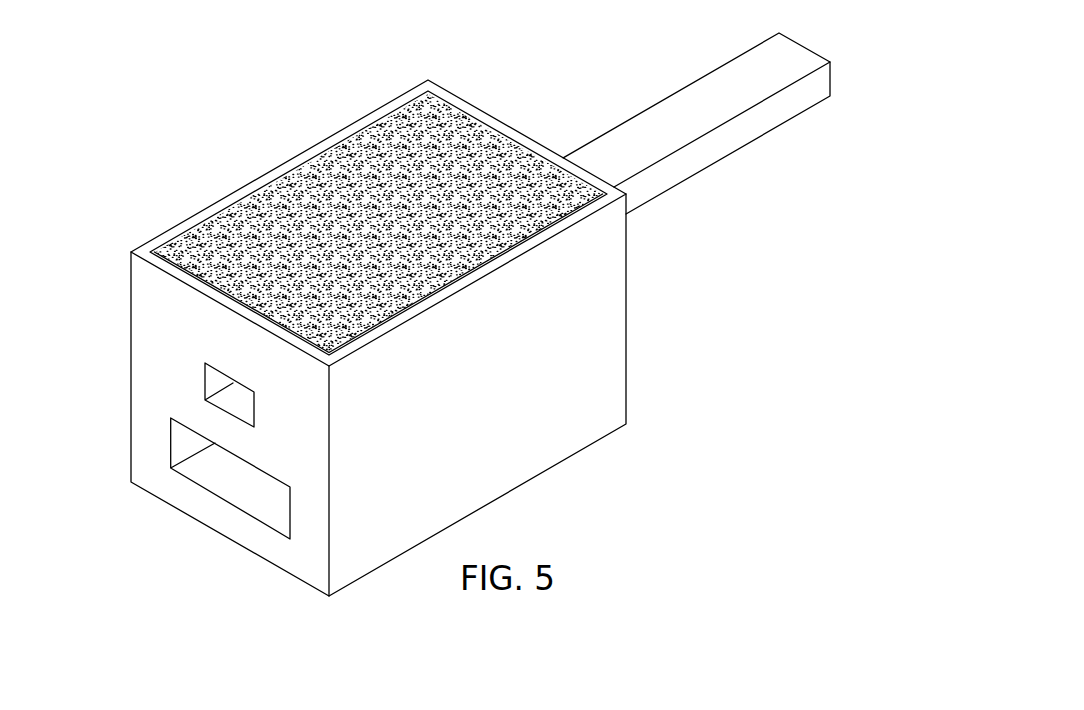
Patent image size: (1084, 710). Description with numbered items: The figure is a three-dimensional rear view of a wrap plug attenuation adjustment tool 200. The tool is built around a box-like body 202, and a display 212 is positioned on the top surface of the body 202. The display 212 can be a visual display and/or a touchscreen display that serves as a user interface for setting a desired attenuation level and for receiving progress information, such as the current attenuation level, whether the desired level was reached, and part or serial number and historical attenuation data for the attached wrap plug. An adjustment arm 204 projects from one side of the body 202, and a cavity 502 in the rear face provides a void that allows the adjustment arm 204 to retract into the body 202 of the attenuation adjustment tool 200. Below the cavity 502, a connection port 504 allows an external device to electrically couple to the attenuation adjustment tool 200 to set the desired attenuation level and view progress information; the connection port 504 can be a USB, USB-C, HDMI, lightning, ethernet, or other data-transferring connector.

The attenuation adjustment tool 200 is at (168, 118).
The body 202 is at (502, 399).
The adjustment arm 204 is at (677, 113).
The display 212 is at (395, 142).
The cavity 502 is at (222, 388).
The connection port 504 is at (220, 483).